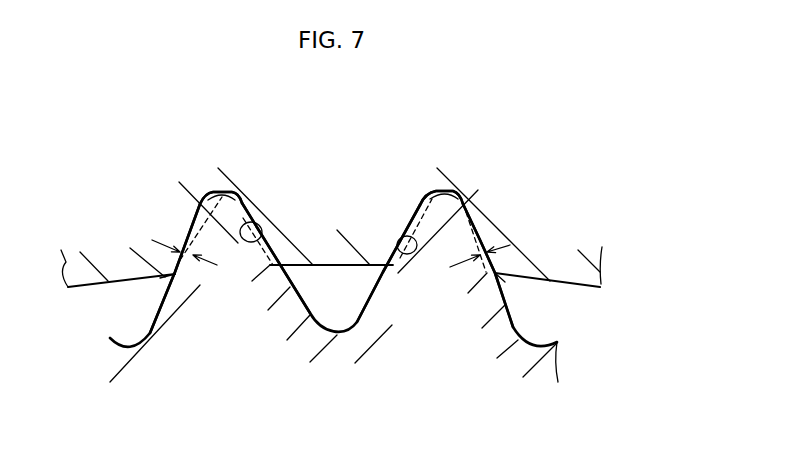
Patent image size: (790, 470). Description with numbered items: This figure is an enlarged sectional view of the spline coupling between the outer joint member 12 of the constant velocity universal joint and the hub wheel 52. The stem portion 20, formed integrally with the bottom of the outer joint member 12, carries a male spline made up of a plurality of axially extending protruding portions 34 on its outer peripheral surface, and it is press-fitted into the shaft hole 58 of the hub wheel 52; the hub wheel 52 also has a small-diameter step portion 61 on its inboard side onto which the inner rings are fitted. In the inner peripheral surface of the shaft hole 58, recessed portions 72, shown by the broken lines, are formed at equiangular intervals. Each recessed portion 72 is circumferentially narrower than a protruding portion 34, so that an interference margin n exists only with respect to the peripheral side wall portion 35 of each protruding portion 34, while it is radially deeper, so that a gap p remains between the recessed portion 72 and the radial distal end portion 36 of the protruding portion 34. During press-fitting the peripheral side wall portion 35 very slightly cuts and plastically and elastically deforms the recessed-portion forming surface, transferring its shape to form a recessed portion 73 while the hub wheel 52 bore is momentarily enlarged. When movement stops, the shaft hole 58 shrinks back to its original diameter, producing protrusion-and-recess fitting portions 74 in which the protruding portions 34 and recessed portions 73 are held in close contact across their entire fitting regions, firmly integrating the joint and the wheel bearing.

The outer joint member 12 is at (574, 343).
The stem portion 20 is at (560, 375).
The protruding portions 34 is at (242, 206).
The peripheral side wall portion 35 is at (192, 221).
The radial distal end portion 36 is at (229, 193).
The hub wheel 52 is at (92, 286).
The shaft hole 58 is at (600, 288).
The small-diameter step portion 61 is at (603, 260).
The recessed portions 72 is at (180, 252).
The recessed portion 73 is at (255, 246).
The protrusion-and-recess fitting portions 74 is at (155, 284).
The interference margin n is at (521, 240).
The gap p is at (207, 192).